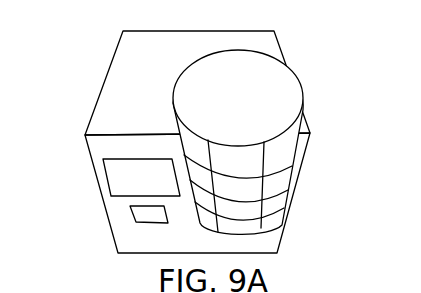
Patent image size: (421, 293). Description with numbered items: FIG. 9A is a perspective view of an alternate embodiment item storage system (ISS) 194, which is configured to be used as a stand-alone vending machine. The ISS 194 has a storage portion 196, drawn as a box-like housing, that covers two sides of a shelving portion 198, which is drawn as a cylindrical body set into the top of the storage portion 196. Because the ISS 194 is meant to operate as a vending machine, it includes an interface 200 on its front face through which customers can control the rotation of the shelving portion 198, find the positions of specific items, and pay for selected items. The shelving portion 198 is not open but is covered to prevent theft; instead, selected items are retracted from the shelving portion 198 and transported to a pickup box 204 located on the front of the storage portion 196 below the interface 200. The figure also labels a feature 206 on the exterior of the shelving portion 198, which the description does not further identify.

The item storage system 194 is at (292, 44).
The storage portion 196 is at (103, 82).
The shelving portion 198 is at (303, 77).
The interface 200 is at (121, 182).
The pickup box 204 is at (148, 220).
The mesh grid 206 is at (245, 204).